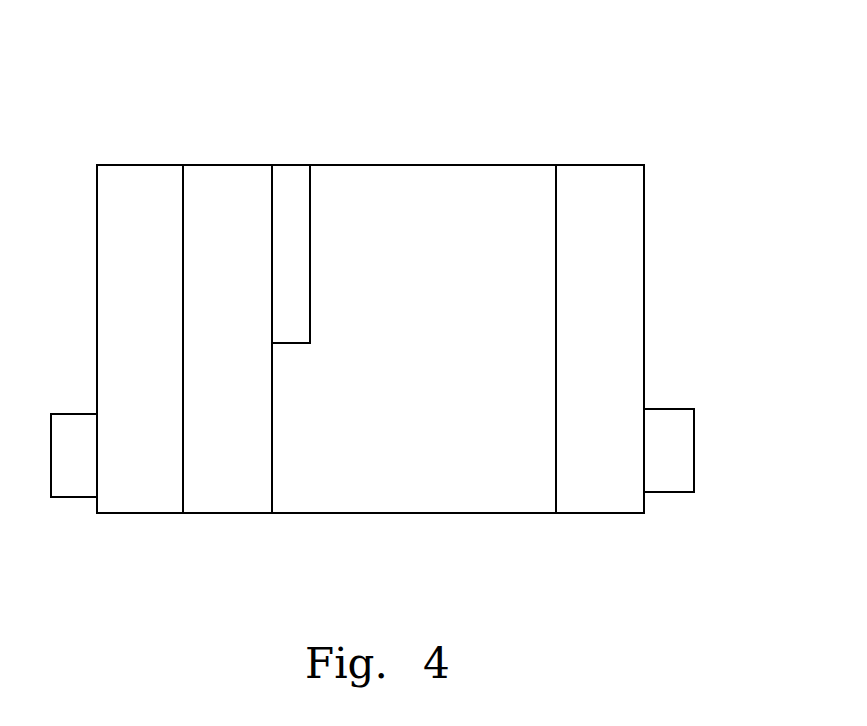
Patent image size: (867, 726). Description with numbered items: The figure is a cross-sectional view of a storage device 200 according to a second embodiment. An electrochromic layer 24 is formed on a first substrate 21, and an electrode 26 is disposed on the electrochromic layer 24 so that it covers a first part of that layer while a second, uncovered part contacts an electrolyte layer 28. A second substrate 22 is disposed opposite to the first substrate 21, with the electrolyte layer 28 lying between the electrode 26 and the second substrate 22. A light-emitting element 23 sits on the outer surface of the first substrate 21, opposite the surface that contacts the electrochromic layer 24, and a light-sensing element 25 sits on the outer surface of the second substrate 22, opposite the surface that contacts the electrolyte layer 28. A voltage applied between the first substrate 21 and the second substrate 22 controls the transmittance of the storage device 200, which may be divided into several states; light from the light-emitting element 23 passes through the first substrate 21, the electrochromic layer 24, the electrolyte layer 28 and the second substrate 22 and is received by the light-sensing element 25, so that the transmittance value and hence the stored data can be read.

The storage device 200 is at (698, 73).
The first substrate 21 is at (142, 182).
The second substrate 22 is at (600, 182).
The light-emitting element 23 is at (72, 413).
The electrochromic layer 24 is at (230, 182).
The light-sensing element 25 is at (673, 408).
The electrode 26 is at (290, 182).
The electrolyte layer 28 is at (443, 182).